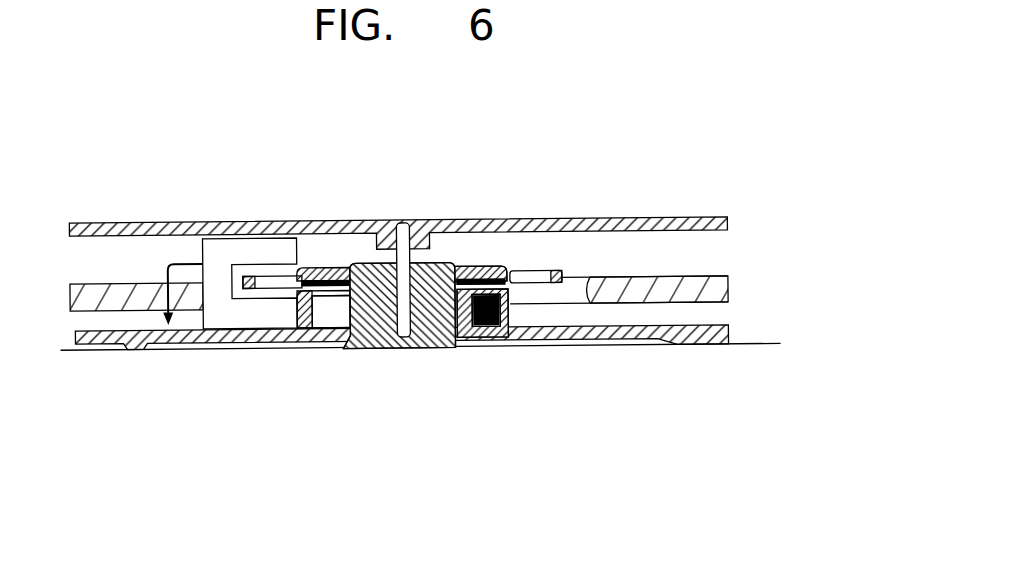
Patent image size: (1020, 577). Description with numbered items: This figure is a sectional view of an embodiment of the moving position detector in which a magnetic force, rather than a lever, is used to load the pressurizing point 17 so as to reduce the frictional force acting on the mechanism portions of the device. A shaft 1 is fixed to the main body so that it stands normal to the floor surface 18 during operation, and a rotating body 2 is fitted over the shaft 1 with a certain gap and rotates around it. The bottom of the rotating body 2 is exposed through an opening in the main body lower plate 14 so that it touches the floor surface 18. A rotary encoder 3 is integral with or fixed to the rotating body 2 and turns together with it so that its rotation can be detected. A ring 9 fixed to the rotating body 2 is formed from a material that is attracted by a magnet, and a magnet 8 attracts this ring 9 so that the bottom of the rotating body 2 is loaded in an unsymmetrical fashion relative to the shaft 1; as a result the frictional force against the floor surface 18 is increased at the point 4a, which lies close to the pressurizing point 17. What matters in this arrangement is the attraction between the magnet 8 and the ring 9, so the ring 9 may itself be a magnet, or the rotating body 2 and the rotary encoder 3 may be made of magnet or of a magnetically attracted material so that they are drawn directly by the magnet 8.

The shaft 1 is at (402, 221).
The rotating body 2 is at (373, 320).
The rotary encoder 3 is at (522, 272).
The point 4a is at (443, 347).
The magnet 8 is at (483, 347).
The ring 9 is at (327, 298).
The main body lower plate 14 is at (590, 345).
The pressurizing point 17 is at (487, 267).
The floor surface 18 is at (768, 343).